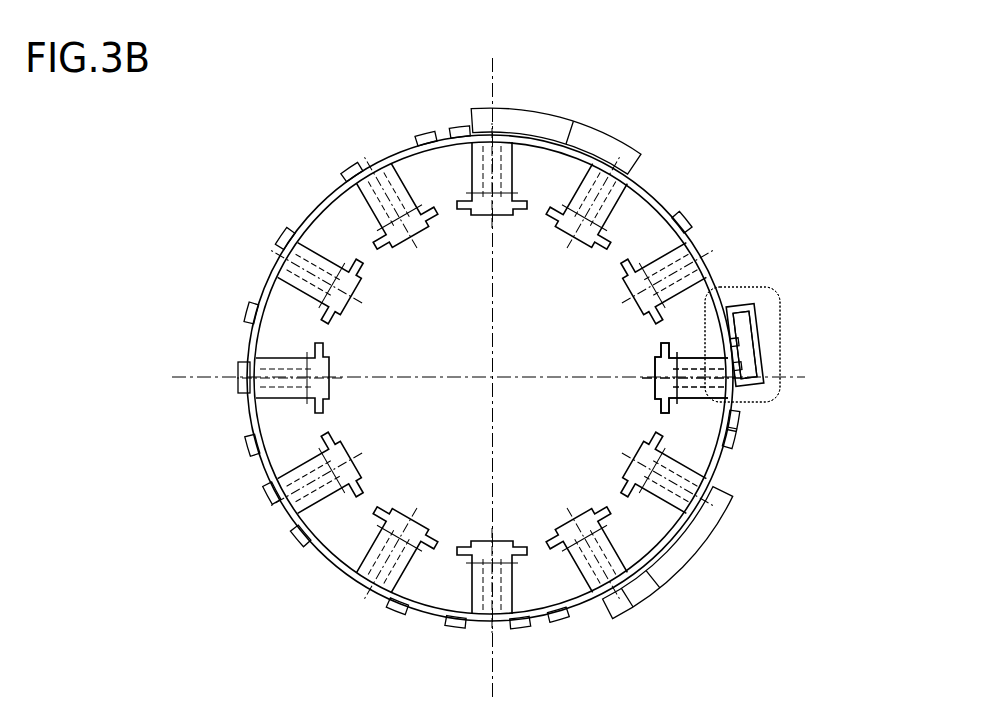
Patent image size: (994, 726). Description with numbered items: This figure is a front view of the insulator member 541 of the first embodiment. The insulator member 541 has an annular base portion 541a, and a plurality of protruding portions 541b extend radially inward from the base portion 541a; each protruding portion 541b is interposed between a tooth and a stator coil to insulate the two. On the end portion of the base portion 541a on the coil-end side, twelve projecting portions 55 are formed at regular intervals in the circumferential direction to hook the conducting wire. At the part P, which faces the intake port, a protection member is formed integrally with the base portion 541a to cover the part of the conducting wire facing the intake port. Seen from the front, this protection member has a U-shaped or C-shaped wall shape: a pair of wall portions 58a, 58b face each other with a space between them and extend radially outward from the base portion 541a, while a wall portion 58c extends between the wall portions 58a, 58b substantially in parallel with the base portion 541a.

The insulator member 541 is at (465, 338).
The annular base portion 541a is at (298, 238).
The protruding portion 541b is at (363, 203).
The projecting portion 55 is at (718, 350).
The wall portion 58a is at (738, 302).
The wall portion 58b is at (758, 392).
The wall portion 58c is at (778, 335).
The part facing the intake port P is at (795, 374).